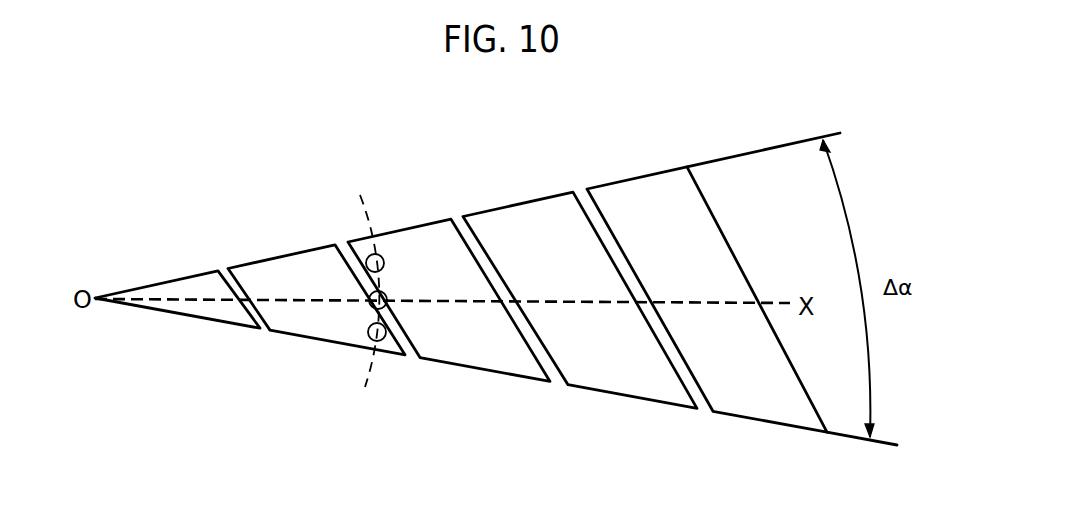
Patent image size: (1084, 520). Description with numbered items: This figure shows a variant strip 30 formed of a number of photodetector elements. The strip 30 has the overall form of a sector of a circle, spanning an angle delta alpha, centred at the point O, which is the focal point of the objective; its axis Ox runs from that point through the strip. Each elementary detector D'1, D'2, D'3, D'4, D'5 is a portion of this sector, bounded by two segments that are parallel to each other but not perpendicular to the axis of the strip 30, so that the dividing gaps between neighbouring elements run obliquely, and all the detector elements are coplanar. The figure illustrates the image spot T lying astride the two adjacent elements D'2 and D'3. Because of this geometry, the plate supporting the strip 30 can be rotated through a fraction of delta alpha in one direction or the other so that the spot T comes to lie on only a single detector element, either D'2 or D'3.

The strip 30 is at (657, 207).
The elementary detector D'1 is at (177, 320).
The elementary detector D'2 is at (316, 317).
The elementary detector D'3 is at (449, 322).
The elementary detector D'4 is at (580, 323).
The elementary detector D'5 is at (707, 321).
The spot T is at (396, 285).